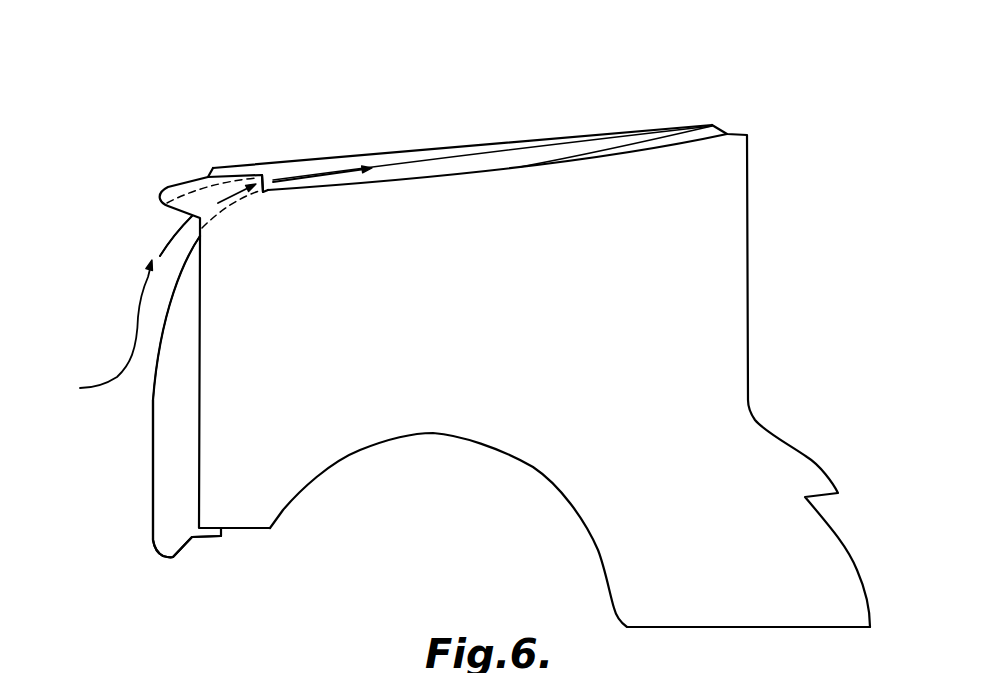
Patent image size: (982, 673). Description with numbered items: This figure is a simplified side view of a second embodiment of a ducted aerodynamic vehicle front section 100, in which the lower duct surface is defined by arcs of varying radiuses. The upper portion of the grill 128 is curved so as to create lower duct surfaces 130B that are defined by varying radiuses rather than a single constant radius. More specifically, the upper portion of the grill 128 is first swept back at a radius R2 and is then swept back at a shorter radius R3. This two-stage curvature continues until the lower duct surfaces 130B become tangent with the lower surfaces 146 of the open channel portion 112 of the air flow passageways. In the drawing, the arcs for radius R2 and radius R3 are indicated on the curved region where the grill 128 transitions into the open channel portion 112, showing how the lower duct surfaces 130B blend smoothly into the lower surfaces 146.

The vehicle body panel (fender) 100 is at (216, 73).
The open channel portion 112 is at (423, 157).
The lower surfaces of the open channel portions 146 is at (520, 167).
The lower duct surfaces 130B is at (265, 176).
The grill 128 is at (152, 468).
The radius R3 is at (251, 212).
The radius R2 is at (378, 365).